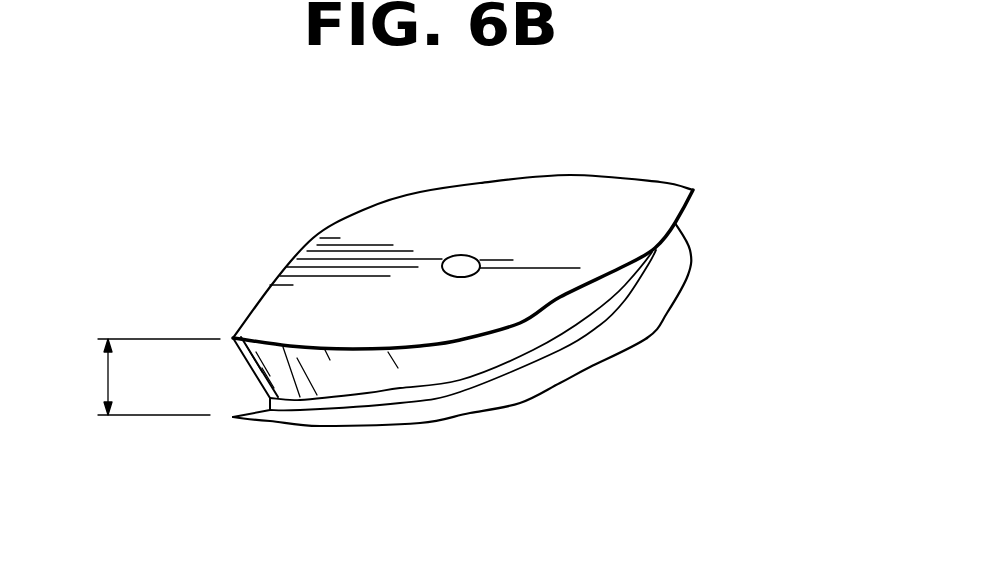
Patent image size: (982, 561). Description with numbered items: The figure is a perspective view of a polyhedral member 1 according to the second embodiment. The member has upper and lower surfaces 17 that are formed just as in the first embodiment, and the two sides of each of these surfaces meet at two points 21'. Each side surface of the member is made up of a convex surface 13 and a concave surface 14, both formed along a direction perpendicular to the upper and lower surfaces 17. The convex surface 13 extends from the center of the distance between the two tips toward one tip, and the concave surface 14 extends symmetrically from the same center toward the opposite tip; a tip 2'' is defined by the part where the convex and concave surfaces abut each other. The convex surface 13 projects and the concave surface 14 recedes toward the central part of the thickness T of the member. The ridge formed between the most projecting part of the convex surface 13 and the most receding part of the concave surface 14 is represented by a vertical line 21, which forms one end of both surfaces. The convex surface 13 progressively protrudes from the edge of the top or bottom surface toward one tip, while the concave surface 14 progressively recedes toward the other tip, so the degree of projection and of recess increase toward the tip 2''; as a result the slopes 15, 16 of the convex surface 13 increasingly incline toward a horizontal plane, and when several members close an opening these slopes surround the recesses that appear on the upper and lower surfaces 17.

The polyhedral member 1 is at (588, 167).
The upper and lower surfaces 17 is at (622, 215).
The points where the two sides meet 21' is at (237, 340).
The tip 2'' is at (194, 376).
The thickness T is at (150, 377).
The concave surface 14 is at (240, 391).
The vertical line 21 is at (250, 442).
The slope 15 is at (322, 377).
The slope 16 is at (402, 412).
The convex surface 13 is at (292, 405).